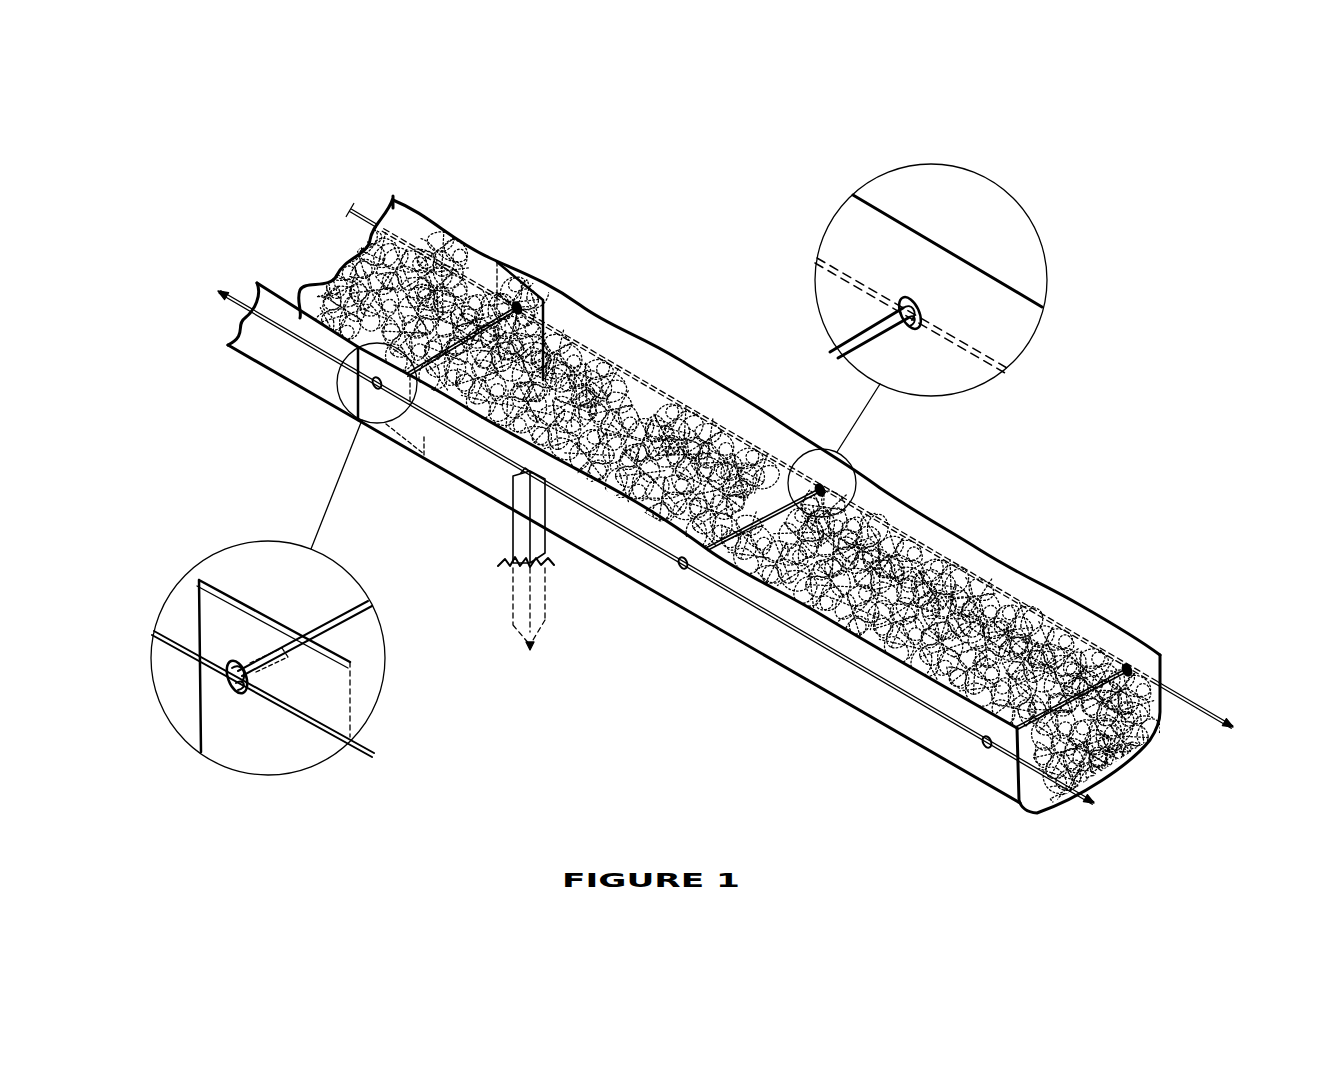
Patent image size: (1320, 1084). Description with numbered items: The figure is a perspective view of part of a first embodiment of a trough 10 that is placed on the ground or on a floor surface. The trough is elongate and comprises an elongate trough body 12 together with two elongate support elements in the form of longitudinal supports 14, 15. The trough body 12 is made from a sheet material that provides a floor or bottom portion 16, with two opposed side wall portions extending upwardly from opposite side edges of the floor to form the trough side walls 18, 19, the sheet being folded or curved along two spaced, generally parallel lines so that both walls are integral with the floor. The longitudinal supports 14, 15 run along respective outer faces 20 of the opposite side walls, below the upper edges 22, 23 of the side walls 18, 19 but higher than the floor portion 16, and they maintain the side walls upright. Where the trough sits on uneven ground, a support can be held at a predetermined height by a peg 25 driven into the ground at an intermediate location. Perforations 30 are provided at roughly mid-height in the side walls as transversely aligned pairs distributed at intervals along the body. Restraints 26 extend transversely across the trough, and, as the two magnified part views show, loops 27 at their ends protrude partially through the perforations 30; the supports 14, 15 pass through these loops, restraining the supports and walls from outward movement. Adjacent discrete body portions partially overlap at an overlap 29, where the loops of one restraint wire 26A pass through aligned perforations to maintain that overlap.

The trough 10 is at (708, 322).
The trough body 12 is at (770, 659).
The longitudinal support 14 is at (1058, 788).
The longitudinal support 15 is at (1180, 690).
The floor portion 16 is at (1110, 770).
The side wall 18 is at (910, 723).
The side wall 19 is at (955, 548).
The outer face 20 is at (263, 541).
The upper edge 22 is at (497, 432).
The upper edge 23 is at (621, 332).
The peg 25 is at (514, 523).
The restraint 26 is at (716, 557).
The restraint wire 26A is at (470, 337).
The loop 27 is at (898, 332).
The overlap 29 is at (527, 266).
The perforation 30 is at (906, 300).